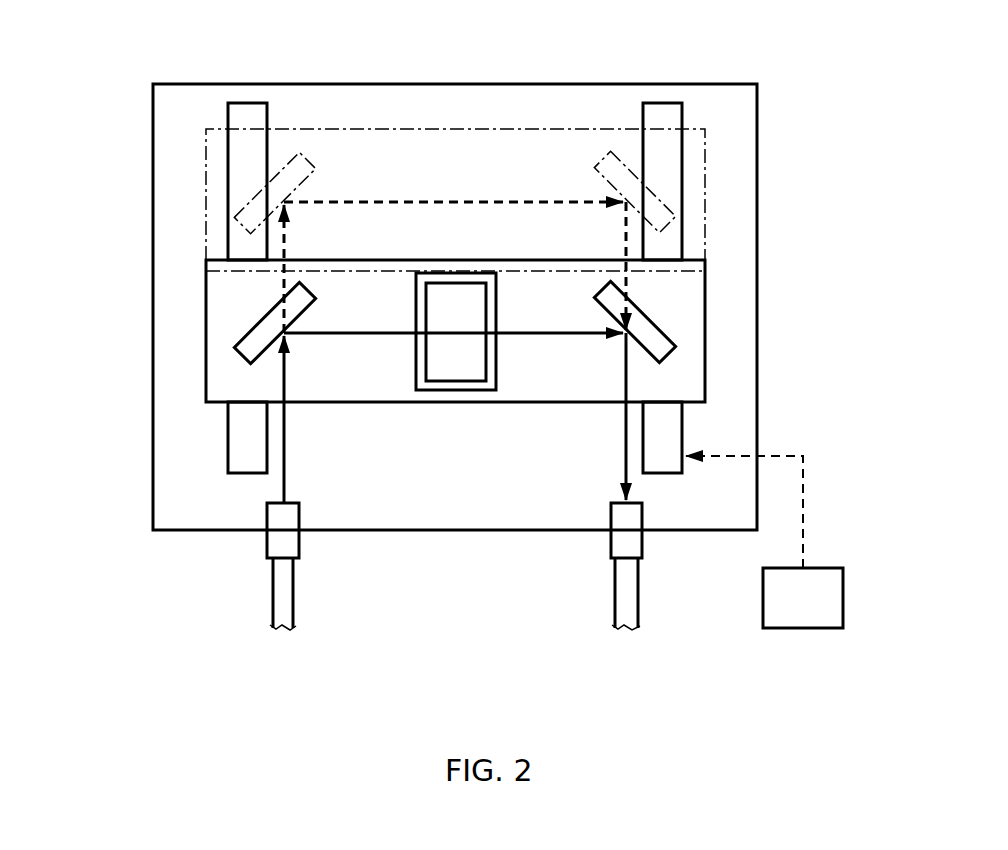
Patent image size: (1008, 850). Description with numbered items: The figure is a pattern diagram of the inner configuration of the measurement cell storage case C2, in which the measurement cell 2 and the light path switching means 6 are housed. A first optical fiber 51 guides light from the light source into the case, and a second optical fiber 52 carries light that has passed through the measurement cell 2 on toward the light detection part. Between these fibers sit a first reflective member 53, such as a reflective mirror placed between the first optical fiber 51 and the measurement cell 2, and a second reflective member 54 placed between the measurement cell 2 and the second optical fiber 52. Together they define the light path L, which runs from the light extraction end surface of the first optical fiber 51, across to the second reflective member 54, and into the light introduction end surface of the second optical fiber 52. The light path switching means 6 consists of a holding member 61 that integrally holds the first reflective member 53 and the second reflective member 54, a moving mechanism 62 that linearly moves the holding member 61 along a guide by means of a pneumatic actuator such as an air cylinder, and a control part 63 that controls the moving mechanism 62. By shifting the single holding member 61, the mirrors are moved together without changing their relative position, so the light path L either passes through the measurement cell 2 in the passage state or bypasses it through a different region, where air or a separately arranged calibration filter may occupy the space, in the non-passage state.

The measurement cell storage case C2 is at (307, 84).
The measurement cell 2 is at (455, 391).
The light path switching means 6 is at (728, 438).
The first optical fiber 51 is at (273, 593).
The second optical fiber 52 is at (639, 593).
The first reflective member 53 is at (258, 192).
The second reflective member 54 is at (648, 192).
The holding member 61 is at (487, 129).
The moving mechanism 62 is at (682, 421).
The control part 63 is at (803, 628).
The light path L is at (398, 202).